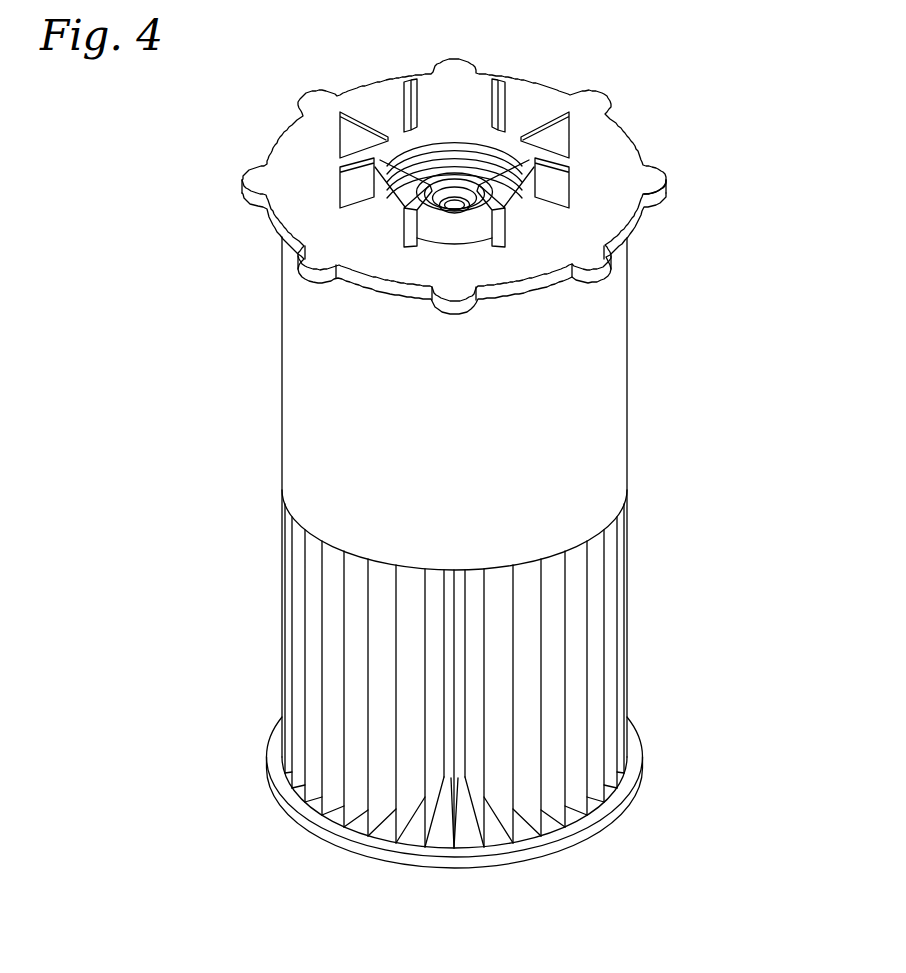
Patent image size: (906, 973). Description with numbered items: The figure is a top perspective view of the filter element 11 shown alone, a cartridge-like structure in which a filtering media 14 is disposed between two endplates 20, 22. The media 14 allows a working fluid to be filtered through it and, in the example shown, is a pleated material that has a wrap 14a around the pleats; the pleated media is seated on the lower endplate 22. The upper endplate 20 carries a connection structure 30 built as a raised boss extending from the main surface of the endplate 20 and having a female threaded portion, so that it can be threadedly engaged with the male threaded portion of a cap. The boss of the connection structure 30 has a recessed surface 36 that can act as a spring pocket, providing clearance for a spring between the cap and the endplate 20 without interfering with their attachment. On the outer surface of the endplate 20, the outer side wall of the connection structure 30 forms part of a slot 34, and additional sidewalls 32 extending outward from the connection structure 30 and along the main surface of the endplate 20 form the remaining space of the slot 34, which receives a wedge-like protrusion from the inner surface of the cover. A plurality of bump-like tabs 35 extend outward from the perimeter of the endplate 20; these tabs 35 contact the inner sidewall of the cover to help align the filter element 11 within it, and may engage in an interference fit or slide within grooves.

The filter element 11 is at (218, 232).
The endplate 20 is at (629, 132).
The tabs 35 is at (662, 204).
The connection structure 30 is at (403, 105).
The recessed surface 36 is at (483, 163).
The sidewalls 32 is at (407, 236).
The slot 34 is at (463, 233).
The wrap 14a is at (627, 437).
The filtering media 14 is at (628, 628).
The endplate 22 is at (630, 794).